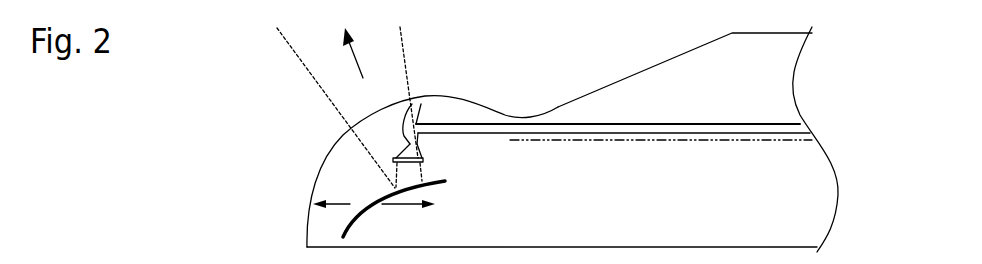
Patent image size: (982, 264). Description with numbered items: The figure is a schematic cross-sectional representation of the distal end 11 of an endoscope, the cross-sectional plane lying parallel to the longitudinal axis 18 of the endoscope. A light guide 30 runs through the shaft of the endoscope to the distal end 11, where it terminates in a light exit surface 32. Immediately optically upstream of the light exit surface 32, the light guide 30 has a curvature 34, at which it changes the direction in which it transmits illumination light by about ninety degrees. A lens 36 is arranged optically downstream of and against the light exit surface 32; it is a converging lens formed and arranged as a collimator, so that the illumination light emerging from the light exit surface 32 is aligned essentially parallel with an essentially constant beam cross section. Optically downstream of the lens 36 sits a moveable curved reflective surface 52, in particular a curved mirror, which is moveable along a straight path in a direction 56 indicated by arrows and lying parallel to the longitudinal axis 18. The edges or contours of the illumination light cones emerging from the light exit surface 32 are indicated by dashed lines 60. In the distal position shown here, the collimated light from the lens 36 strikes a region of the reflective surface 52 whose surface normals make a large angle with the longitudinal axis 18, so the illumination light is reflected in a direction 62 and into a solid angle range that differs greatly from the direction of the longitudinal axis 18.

The distal end 11 is at (264, 68).
The longitudinal axis 18 is at (572, 139).
The light guide 30 is at (633, 125).
The light exit surface 32 is at (410, 145).
The curvature 34 is at (413, 140).
The lens 36 is at (424, 157).
The moveable curved reflective surface 52 is at (438, 181).
The direction of movement 56 is at (350, 200).
The dashed lines 60 is at (403, 45).
The direction of illumination light 62 is at (353, 55).